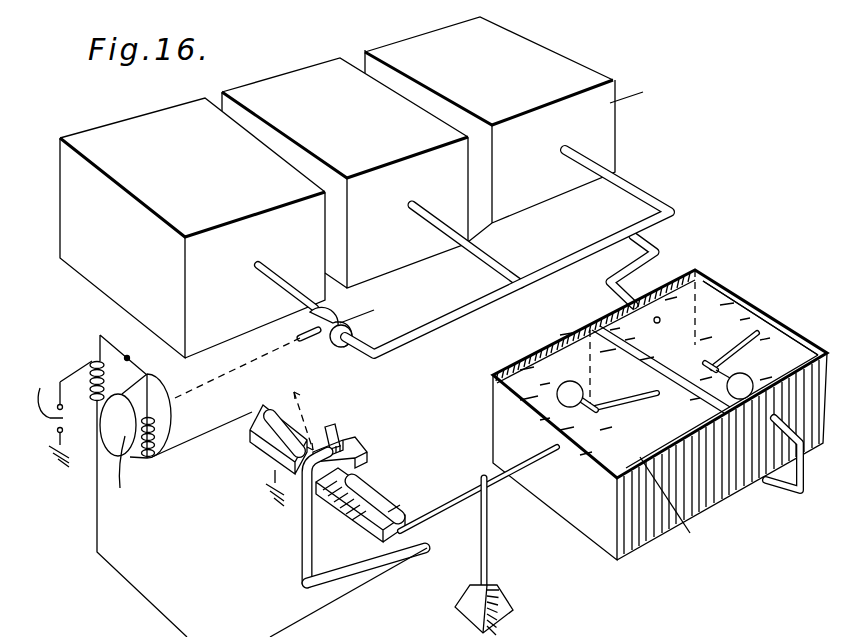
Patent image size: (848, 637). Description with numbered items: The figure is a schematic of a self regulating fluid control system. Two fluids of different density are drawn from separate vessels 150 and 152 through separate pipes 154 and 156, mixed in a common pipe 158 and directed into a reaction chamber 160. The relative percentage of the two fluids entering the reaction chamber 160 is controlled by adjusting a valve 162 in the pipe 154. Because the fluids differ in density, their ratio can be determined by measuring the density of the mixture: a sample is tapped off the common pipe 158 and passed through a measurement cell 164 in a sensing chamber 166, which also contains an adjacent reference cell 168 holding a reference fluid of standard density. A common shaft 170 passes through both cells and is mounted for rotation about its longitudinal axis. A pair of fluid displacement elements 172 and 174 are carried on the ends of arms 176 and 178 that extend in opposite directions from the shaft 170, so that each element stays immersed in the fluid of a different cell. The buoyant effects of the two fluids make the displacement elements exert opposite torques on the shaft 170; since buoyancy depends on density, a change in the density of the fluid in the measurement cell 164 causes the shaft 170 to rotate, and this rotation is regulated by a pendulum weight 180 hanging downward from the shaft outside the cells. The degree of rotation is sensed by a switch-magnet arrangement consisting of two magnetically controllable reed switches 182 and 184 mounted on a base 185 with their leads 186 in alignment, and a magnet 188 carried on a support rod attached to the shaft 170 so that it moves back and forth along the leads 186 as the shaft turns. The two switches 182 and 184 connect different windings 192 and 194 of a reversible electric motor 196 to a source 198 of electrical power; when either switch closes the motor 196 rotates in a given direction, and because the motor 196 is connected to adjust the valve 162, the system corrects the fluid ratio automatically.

The vessel 150 is at (110, 133).
The vessel 152 is at (300, 77).
The pipe 154 is at (288, 287).
The pipe 156 is at (432, 224).
The common pipe 158 is at (598, 250).
The reaction chamber 160 is at (540, 50).
The valve 162 is at (352, 329).
The measurement cell 164 is at (712, 296).
The sensing chamber 166 is at (779, 297).
The reference cell 168 is at (525, 375).
The common shaft 170 is at (490, 480).
The fluid displacement element 172 is at (750, 378).
The fluid displacement element 174 is at (570, 381).
The arm 176 is at (712, 362).
The arm 178 is at (597, 407).
The pendulum weight 180 is at (505, 603).
The reed switch 182 is at (280, 410).
The reed switch 184 is at (358, 515).
The base 185 is at (392, 513).
The switch leads 186 is at (295, 458).
The magnet 188 is at (350, 447).
The winding 192 is at (92, 362).
The winding 194 is at (157, 422).
The reversible electric motor 196 is at (182, 398).
The source of electrical power 198 is at (61, 412).